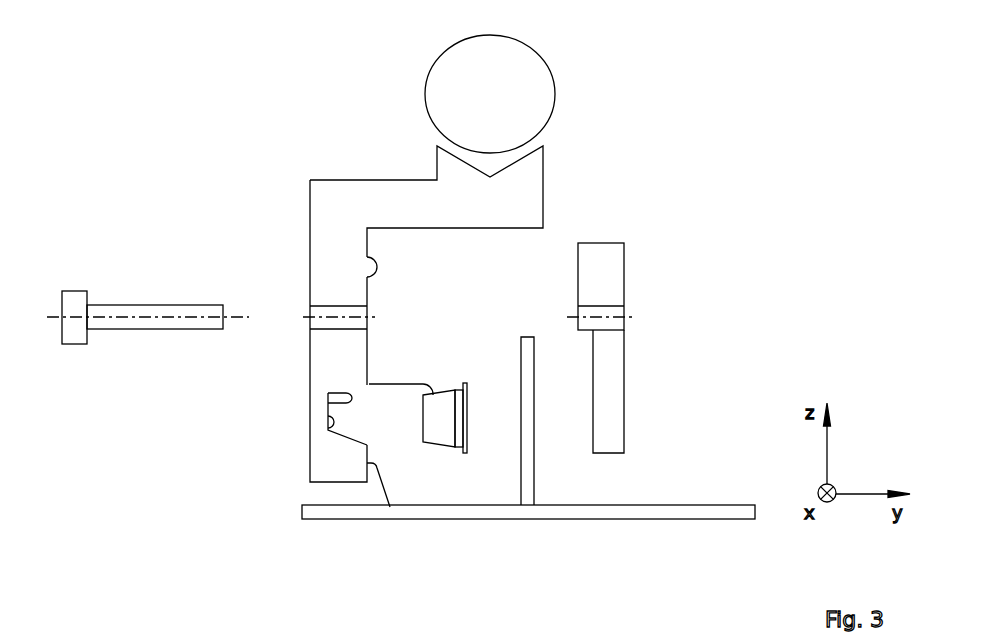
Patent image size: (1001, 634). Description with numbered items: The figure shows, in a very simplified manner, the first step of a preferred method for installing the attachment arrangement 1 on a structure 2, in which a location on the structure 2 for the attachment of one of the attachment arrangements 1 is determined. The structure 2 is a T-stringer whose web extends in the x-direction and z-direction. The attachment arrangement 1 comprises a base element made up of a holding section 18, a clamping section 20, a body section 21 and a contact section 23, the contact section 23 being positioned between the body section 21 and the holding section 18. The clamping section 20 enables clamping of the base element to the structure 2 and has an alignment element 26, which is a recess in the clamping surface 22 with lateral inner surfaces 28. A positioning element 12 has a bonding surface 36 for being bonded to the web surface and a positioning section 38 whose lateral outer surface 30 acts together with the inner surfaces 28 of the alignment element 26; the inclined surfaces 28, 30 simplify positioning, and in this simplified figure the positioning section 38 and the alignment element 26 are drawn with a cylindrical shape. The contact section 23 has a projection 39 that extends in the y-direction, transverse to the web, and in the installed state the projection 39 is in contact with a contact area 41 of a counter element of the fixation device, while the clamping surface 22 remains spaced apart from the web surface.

The attachment arrangement 1 is at (139, 74).
The structure 2 is at (282, 521).
The positioning element 12 is at (488, 395).
The holding section 18 is at (392, 200).
The clamping section 20 is at (323, 462).
The body section 21 is at (327, 348).
The clamping surface 22 is at (390, 507).
The contact section 23 is at (327, 288).
The alignment element 26 is at (328, 431).
The lateral inner surfaces 28 is at (345, 399).
The lateral outer surface 30 is at (369, 384).
The bonding surface 36 is at (467, 430).
The positioning section 38 is at (444, 462).
The projection 39 is at (377, 267).
The contact area 41 is at (603, 272).